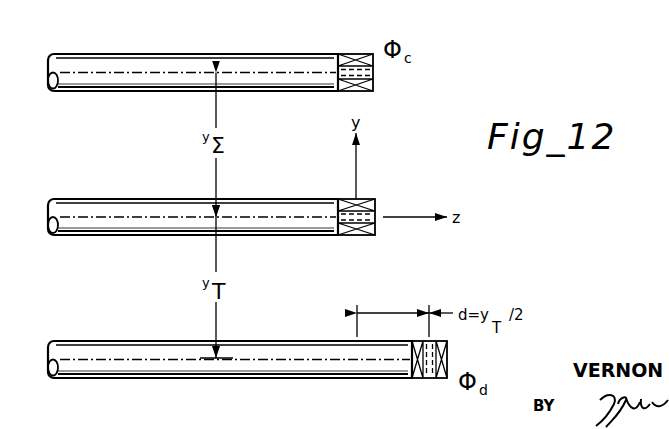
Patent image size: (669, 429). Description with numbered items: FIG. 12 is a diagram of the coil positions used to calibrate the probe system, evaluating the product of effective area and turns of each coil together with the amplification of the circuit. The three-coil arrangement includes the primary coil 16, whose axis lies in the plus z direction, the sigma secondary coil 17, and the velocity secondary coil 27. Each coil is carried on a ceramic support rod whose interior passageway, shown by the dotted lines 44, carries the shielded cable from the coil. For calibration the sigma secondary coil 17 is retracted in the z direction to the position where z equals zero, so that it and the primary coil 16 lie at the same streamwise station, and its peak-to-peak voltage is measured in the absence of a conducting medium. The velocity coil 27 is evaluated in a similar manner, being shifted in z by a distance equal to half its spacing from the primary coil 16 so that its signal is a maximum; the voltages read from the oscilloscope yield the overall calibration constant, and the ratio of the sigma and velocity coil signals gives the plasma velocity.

The passageway 44 is at (312, 55).
The secondary coil 17 is at (351, 55).
The primary coil 16 is at (382, 191).
The secondary coil 27 is at (420, 378).